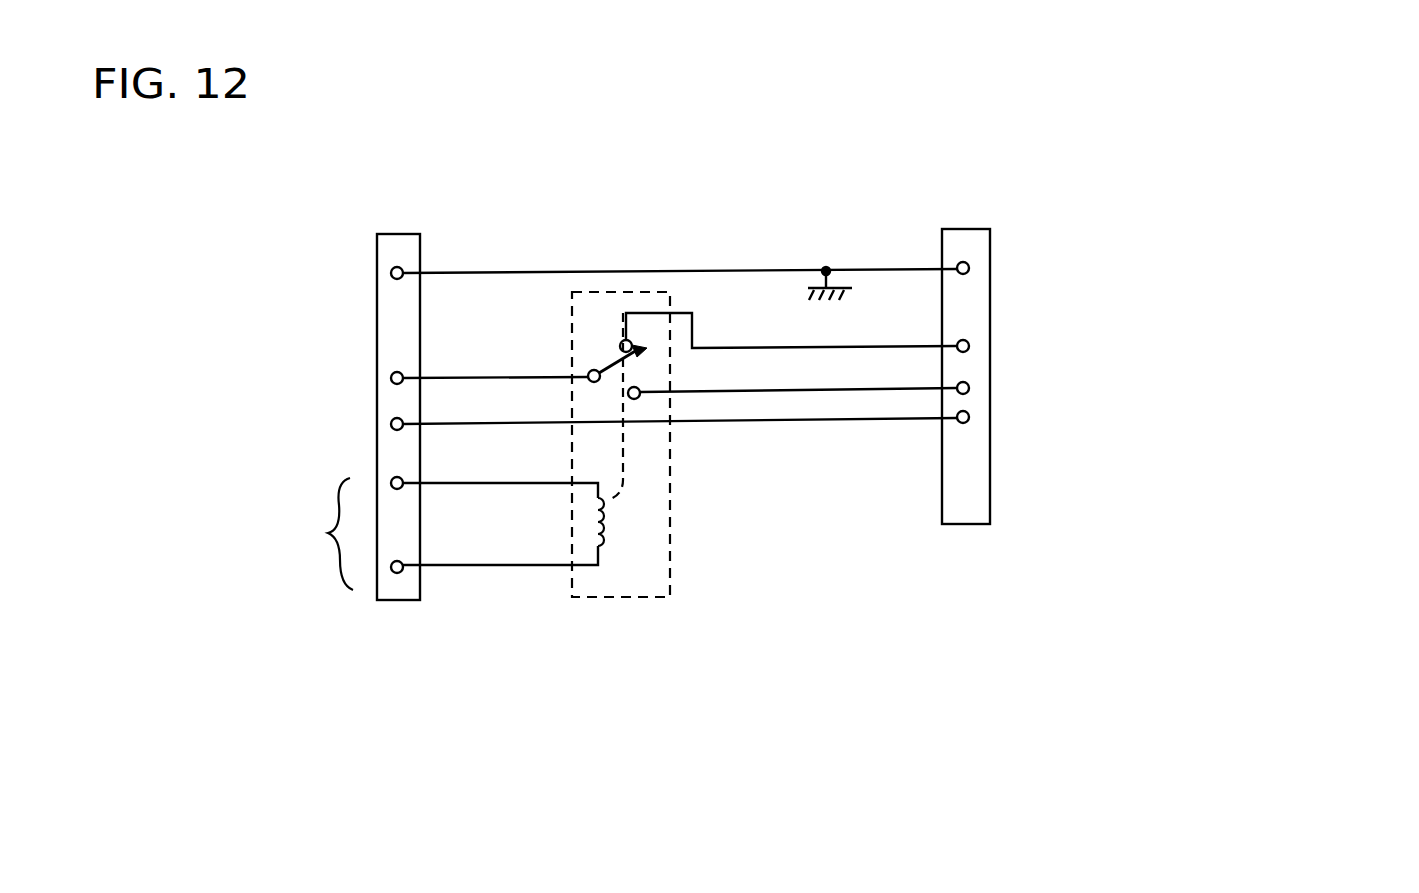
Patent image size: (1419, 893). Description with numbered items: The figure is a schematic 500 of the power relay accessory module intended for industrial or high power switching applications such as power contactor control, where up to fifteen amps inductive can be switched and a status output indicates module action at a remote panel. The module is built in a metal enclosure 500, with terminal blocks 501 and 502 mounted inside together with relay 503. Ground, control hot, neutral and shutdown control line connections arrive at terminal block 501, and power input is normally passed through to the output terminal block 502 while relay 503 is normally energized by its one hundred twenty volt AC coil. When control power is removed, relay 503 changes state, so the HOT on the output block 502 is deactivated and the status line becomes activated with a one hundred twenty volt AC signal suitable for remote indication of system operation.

The schematic 500 is at (178, 213).
The terminal block 501 is at (421, 243).
The terminal block 502 is at (990, 238).
The relay 503 is at (670, 538).